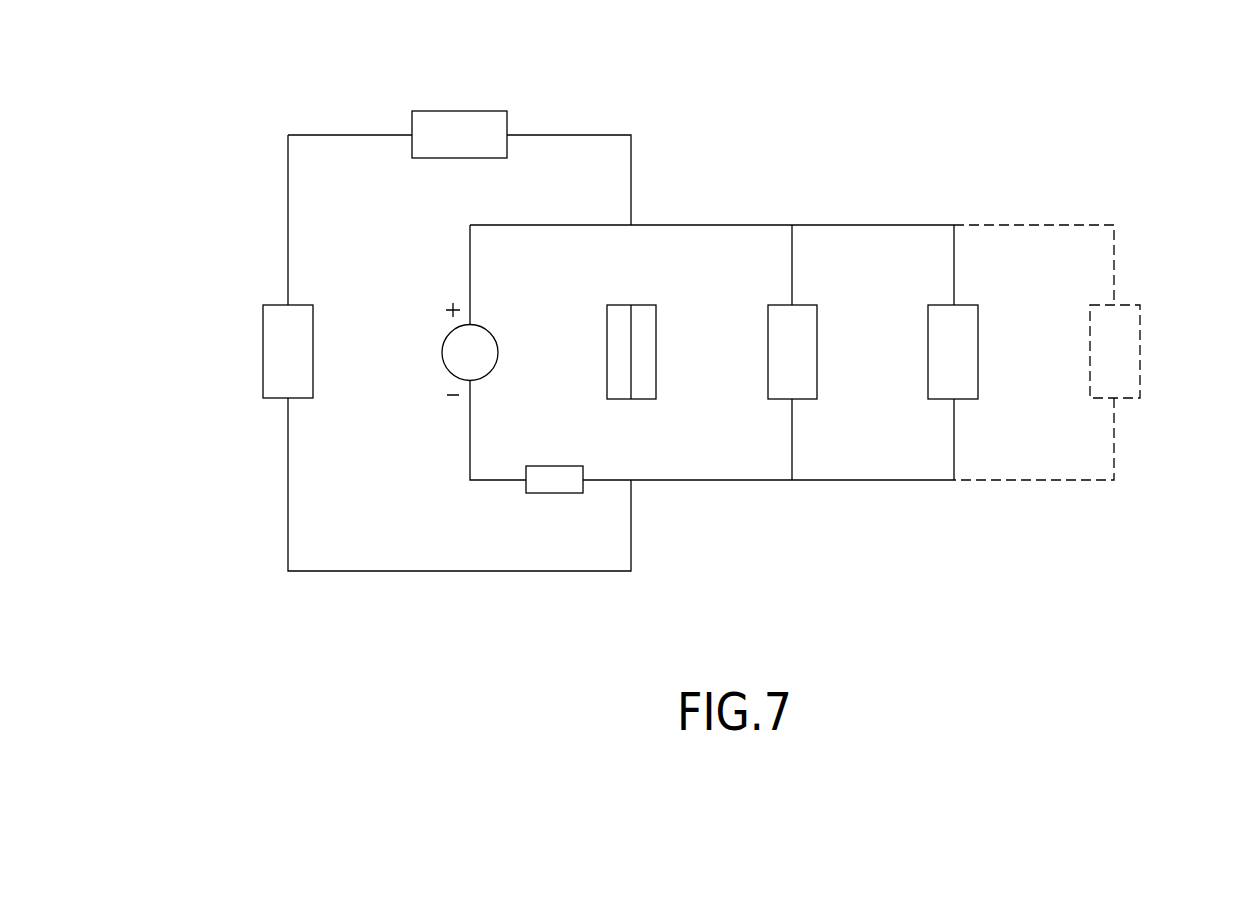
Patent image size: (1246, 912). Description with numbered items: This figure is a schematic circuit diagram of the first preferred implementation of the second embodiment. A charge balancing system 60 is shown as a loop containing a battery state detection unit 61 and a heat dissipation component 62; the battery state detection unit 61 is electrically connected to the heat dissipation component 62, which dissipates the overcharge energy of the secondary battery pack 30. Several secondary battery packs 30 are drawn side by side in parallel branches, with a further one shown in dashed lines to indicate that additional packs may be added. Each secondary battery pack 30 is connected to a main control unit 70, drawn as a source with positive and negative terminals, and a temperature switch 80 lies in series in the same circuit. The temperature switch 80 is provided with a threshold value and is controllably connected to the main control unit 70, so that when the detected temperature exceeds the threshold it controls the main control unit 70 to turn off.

The secondary battery pack 30 is at (645, 312).
The charge balancing system 60 is at (340, 65).
The battery state detection unit 61 is at (432, 127).
The heat dissipation component 62 is at (280, 325).
The main control unit 70 is at (477, 340).
The temperature switch 80 is at (553, 477).